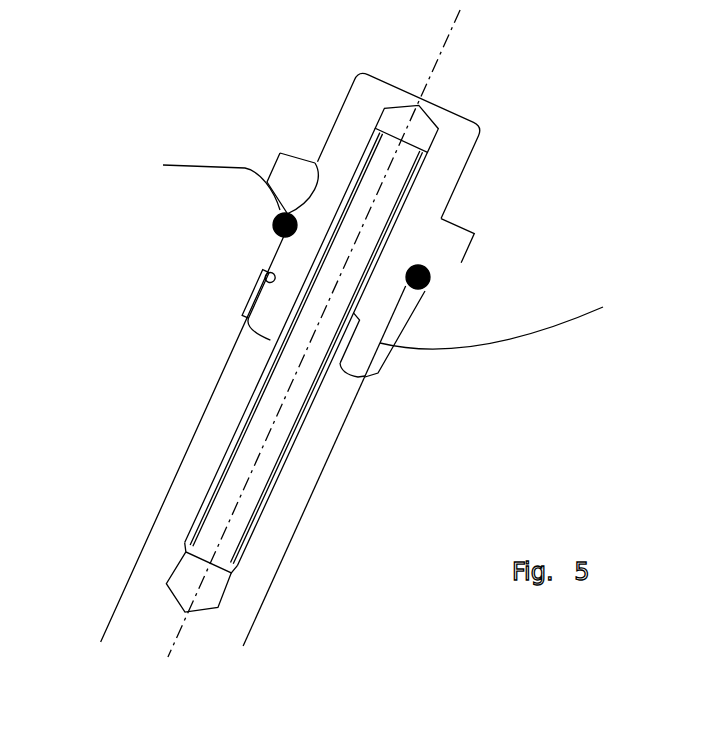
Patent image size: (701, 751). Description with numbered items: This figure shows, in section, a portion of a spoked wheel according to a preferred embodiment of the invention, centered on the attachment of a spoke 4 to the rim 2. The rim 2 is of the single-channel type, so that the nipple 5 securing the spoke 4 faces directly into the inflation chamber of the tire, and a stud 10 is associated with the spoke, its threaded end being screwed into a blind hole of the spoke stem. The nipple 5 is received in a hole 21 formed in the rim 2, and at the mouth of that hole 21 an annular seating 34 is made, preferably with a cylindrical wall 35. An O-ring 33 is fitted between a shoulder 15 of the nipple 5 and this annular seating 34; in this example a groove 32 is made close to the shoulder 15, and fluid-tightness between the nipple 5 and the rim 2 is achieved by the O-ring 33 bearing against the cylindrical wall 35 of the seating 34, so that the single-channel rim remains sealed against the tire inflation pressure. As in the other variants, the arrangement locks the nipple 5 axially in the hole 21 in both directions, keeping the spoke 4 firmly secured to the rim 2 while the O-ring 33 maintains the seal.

The rim 2 is at (524, 311).
The spoke 4 is at (292, 562).
The nipple 5 is at (490, 126).
The stud 10 is at (267, 465).
The shoulder 15 is at (455, 240).
The hole 21 is at (60, 248).
The groove 32 is at (315, 163).
The O-ring 33 is at (428, 266).
The annular seating 34 is at (277, 209).
The cylindrical wall 35 is at (272, 228).